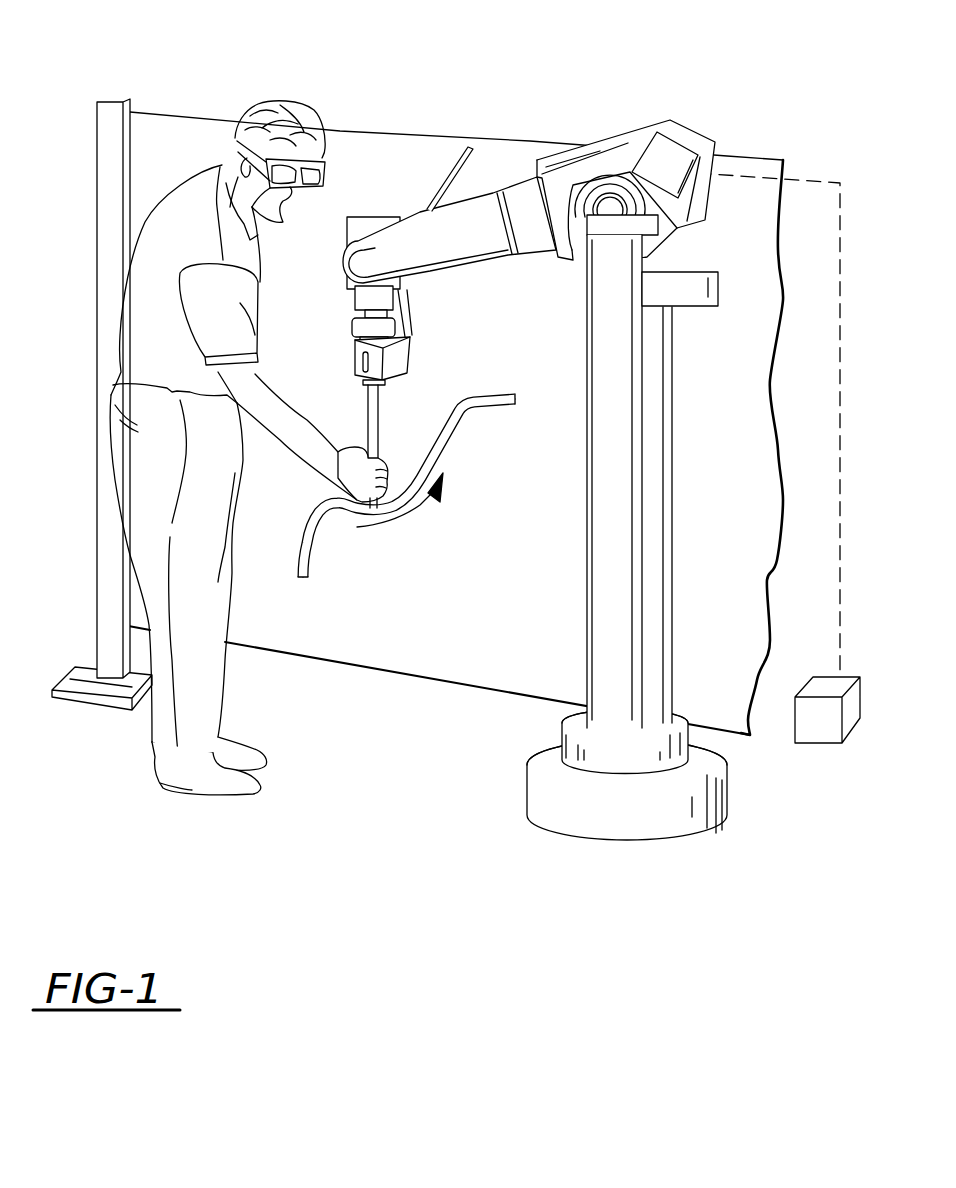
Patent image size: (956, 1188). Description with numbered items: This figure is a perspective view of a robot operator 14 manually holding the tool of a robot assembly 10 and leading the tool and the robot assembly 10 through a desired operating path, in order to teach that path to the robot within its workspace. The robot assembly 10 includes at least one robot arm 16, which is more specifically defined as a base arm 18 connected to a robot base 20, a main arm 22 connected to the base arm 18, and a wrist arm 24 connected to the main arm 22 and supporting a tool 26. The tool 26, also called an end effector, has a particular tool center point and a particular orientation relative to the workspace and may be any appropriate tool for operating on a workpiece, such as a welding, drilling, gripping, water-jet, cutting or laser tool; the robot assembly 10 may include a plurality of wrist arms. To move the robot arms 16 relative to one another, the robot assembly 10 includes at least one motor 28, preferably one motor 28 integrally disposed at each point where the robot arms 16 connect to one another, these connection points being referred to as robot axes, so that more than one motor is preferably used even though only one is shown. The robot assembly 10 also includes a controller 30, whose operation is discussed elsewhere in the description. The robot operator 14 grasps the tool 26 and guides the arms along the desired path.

The robot assembly 10 is at (453, 453).
The robot operator 14 is at (138, 446).
The robot arm 16 is at (536, 453).
The base arm 18 is at (660, 520).
The robot base 20 is at (658, 817).
The main arm 22 is at (566, 187).
The wrist arm 24 is at (395, 293).
The tool 26 is at (373, 430).
The motor 28 is at (678, 162).
The controller 30 is at (818, 715).